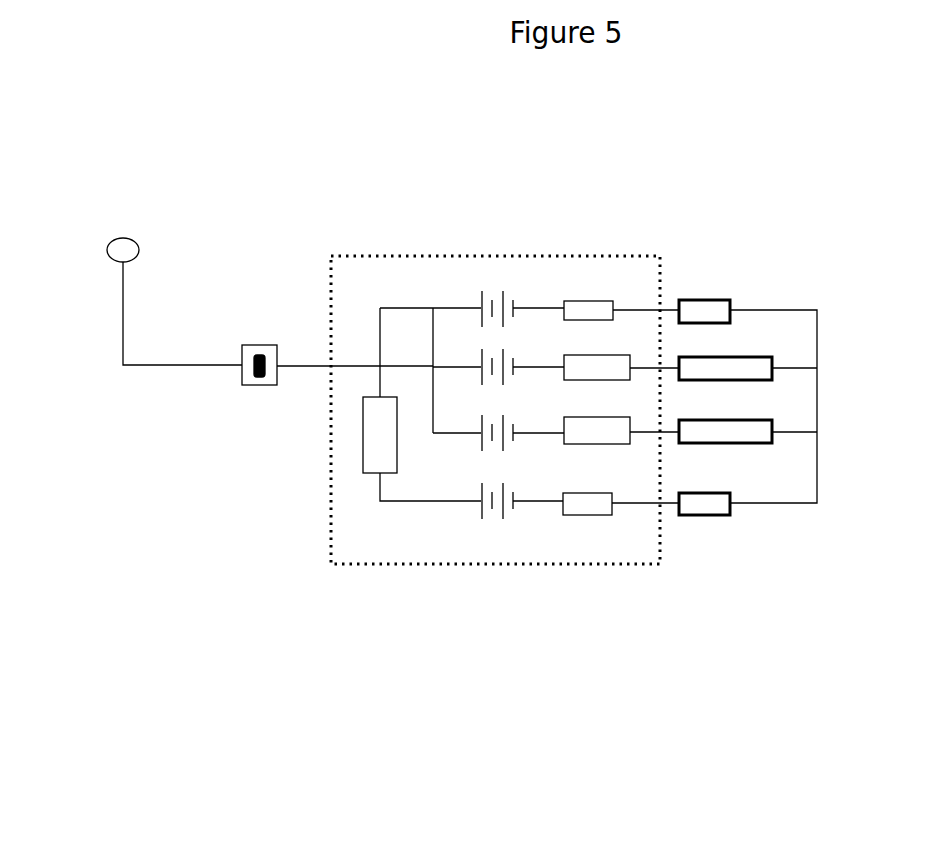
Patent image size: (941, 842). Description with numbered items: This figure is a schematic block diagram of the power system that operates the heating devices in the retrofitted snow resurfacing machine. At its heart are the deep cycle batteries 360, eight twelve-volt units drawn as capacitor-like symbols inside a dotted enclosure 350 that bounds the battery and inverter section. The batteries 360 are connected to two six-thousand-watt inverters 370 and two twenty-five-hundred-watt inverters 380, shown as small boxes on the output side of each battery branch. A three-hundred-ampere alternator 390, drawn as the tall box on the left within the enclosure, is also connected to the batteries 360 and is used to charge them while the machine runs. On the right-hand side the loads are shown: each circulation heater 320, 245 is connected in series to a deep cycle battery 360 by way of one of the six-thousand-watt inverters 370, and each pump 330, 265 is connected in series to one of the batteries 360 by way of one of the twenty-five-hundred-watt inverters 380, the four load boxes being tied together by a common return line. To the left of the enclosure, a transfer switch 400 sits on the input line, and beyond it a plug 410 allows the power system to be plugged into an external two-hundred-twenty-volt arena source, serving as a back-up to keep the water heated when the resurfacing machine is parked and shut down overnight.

The plug 410 is at (138, 238).
The transfer switch 400 is at (258, 390).
The control circuit 350 is at (448, 253).
The alternator 390 is at (367, 453).
The deep cycle batteries 360 is at (473, 322).
The 6000 watt inverters 370 is at (623, 402).
The 2500 watt inverters 380 is at (555, 293).
The pump 330 is at (708, 283).
The circulation heater 320 is at (775, 350).
The circulation heater 245 is at (775, 415).
The pump 265 is at (732, 487).